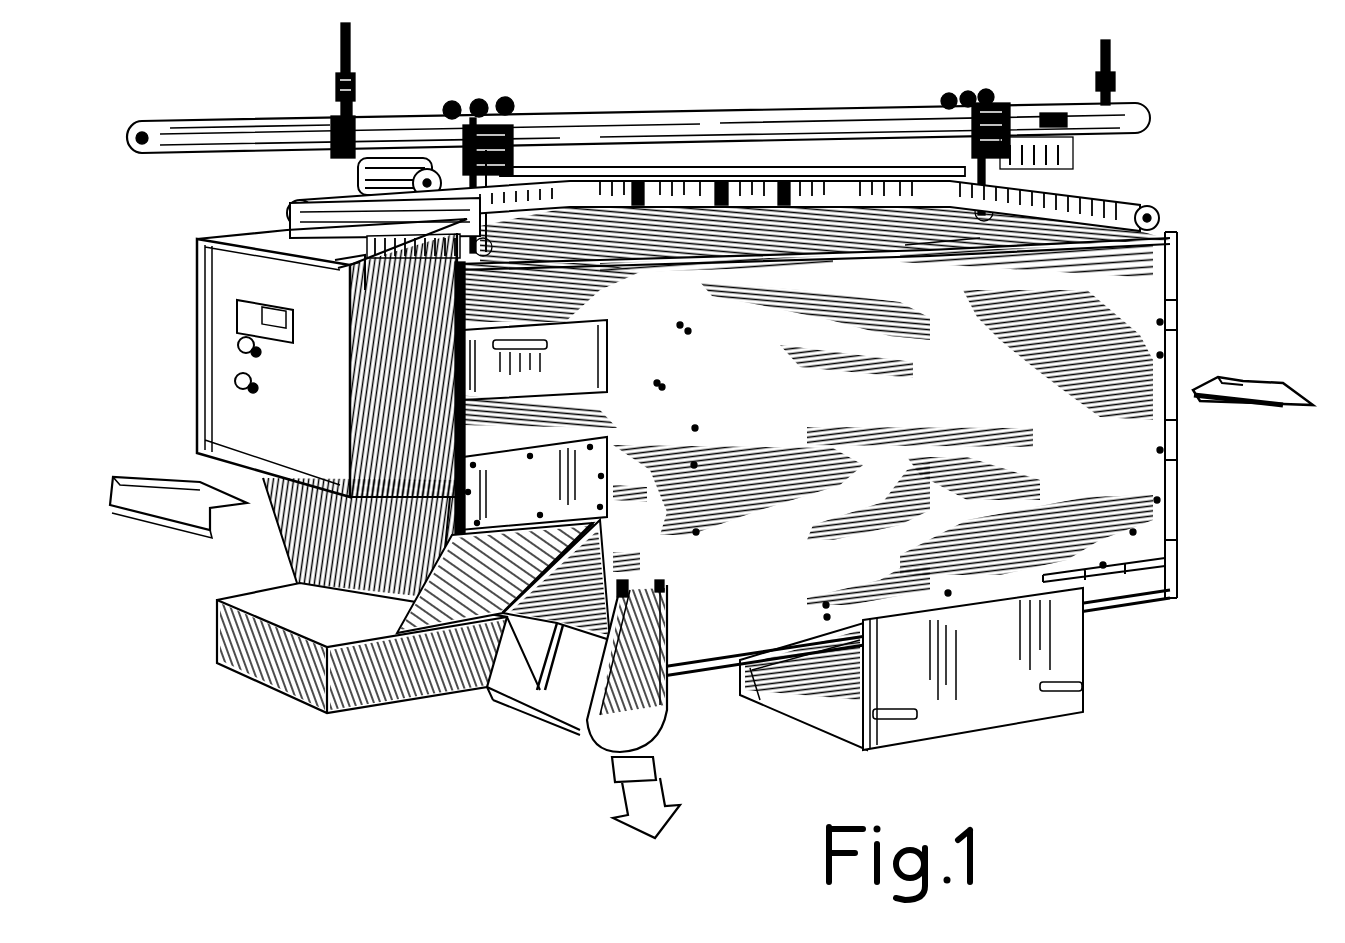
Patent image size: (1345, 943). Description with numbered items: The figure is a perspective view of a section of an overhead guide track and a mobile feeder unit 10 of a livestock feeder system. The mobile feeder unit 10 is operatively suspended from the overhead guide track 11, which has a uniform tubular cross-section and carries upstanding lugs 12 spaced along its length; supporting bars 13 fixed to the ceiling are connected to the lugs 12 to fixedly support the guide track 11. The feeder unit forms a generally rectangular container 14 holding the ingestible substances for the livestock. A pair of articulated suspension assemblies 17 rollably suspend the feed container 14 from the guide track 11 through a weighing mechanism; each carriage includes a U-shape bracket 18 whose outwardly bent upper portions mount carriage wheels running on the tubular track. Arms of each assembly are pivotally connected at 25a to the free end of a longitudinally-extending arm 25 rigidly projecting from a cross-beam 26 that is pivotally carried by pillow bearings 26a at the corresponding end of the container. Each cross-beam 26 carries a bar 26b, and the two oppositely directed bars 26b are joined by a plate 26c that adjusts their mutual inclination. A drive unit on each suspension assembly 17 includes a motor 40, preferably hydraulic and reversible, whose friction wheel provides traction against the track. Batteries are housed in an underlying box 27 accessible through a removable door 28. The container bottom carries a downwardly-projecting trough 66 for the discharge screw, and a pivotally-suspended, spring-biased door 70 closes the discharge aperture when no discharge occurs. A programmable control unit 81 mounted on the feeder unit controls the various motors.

The mobile feeder unit 10 is at (1206, 300).
The overhead guide track 11 is at (624, 118).
The upstanding lugs 12 is at (333, 109).
The supporting bars 13 is at (338, 47).
The container 14 is at (1138, 312).
The articulated suspension assemblies 17 is at (568, 112).
The U-shape bracket 18 is at (568, 112).
The longitudinally-extending arm 25 is at (356, 196).
The pivotal connection 25a is at (927, 240).
The cross-beam 26 is at (305, 198).
The pillow bearings 26a is at (1160, 213).
The bar 26b is at (638, 196).
The plate 26c is at (722, 197).
The underlying box 27 is at (848, 714).
The removable door 28 is at (1000, 690).
The motor 40 is at (365, 165).
The trough 66 is at (533, 713).
The door 70 is at (612, 718).
The programmable control unit 81 is at (180, 333).